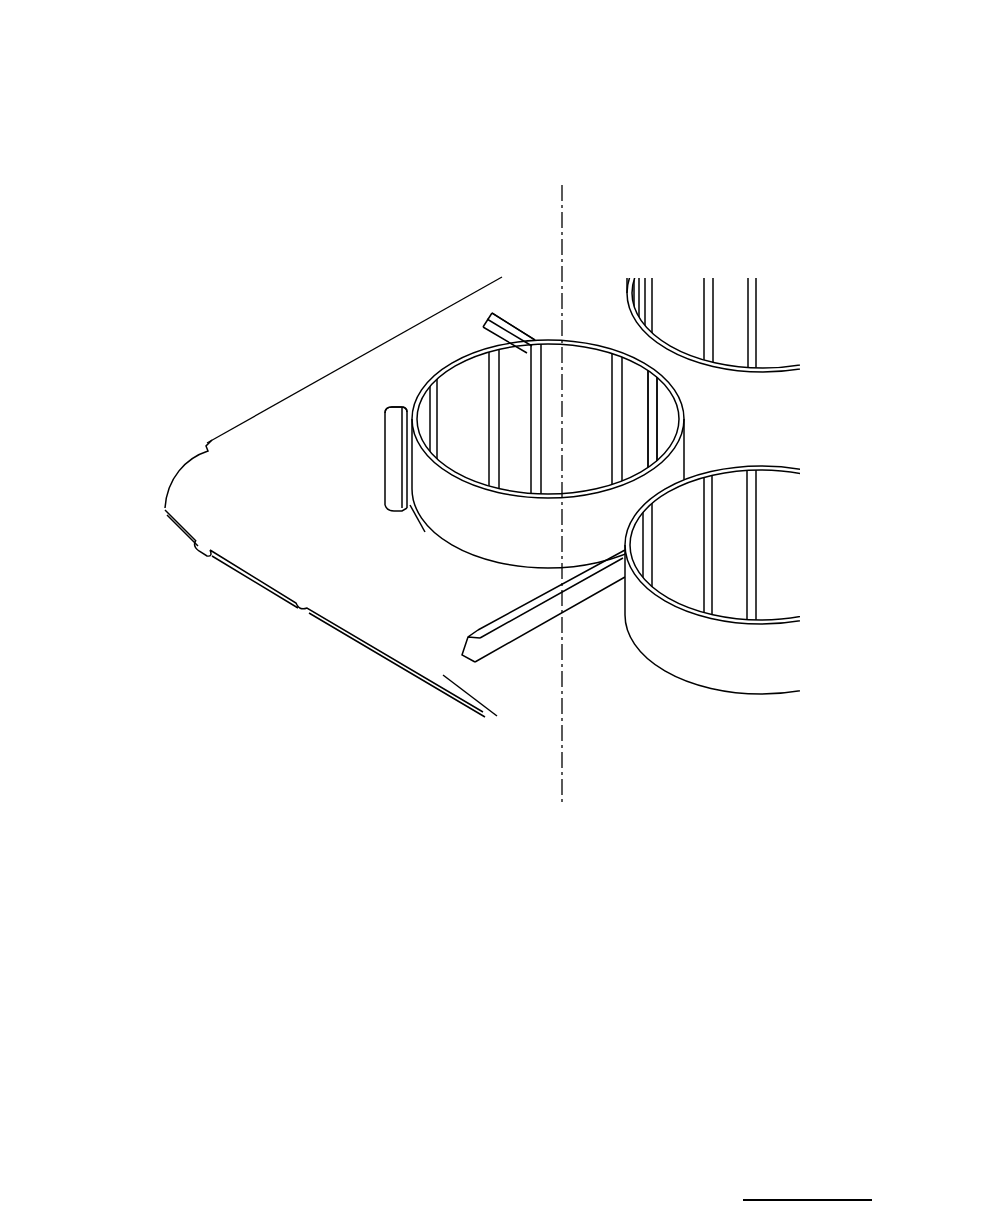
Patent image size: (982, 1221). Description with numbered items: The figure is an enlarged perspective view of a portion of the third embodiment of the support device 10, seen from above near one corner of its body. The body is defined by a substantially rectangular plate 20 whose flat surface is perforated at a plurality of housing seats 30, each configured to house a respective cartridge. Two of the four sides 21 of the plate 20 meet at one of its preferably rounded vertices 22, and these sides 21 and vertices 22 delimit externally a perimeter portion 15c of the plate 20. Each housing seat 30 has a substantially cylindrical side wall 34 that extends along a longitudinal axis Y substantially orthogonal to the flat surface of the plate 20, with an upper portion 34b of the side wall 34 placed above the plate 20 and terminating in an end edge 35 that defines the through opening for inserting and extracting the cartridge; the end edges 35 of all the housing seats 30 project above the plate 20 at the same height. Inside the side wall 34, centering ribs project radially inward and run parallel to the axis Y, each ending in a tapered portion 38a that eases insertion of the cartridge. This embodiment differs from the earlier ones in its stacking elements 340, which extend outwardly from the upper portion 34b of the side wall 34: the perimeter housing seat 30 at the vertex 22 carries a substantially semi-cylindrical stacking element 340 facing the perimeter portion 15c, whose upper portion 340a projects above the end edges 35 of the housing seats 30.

The support device 10 is at (210, 103).
The perimeter portion 15c is at (400, 395).
The plate 20 is at (262, 462).
The side 21 is at (317, 383).
The vertex 22 is at (165, 508).
The housing seat 30 is at (458, 355).
The side wall 34 is at (542, 538).
The upper portion of the side wall 34b is at (487, 523).
The end edge 35 is at (452, 473).
The tapered portion 38a is at (648, 410).
The stacking element 340 is at (393, 473).
The upper portion of the stacking element 340a is at (397, 413).
The longitudinal axis Y is at (572, 790).